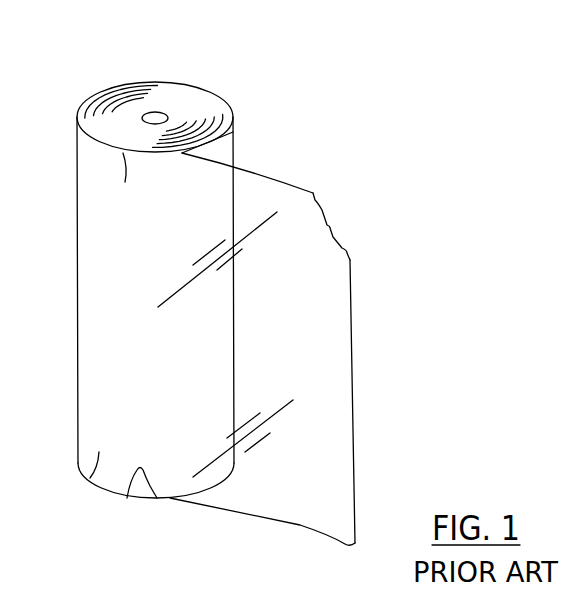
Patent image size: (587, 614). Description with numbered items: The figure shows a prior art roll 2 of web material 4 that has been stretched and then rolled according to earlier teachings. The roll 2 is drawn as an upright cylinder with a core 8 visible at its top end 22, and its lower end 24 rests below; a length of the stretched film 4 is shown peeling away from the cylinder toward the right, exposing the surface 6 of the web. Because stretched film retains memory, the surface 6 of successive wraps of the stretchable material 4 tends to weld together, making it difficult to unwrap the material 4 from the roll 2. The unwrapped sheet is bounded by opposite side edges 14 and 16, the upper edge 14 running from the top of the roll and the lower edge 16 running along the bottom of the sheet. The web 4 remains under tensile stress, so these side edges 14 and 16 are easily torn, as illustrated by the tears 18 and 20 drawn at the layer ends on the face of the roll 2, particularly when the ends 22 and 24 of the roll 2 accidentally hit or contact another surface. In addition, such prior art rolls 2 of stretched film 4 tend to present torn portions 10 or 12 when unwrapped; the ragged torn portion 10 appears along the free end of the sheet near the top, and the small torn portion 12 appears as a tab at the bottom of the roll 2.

The roll 2 is at (227, 63).
The stretchable material 4 is at (287, 168).
The surface 6 is at (294, 372).
The core 8 is at (139, 85).
The torn portion 10 is at (332, 227).
The torn portion 12 is at (147, 498).
The side edge 14 is at (233, 132).
The side edge 16 is at (252, 520).
The tear 18 is at (135, 166).
The tear 20 is at (102, 462).
The end of roll 22 is at (87, 80).
The end of roll 24 is at (102, 510).